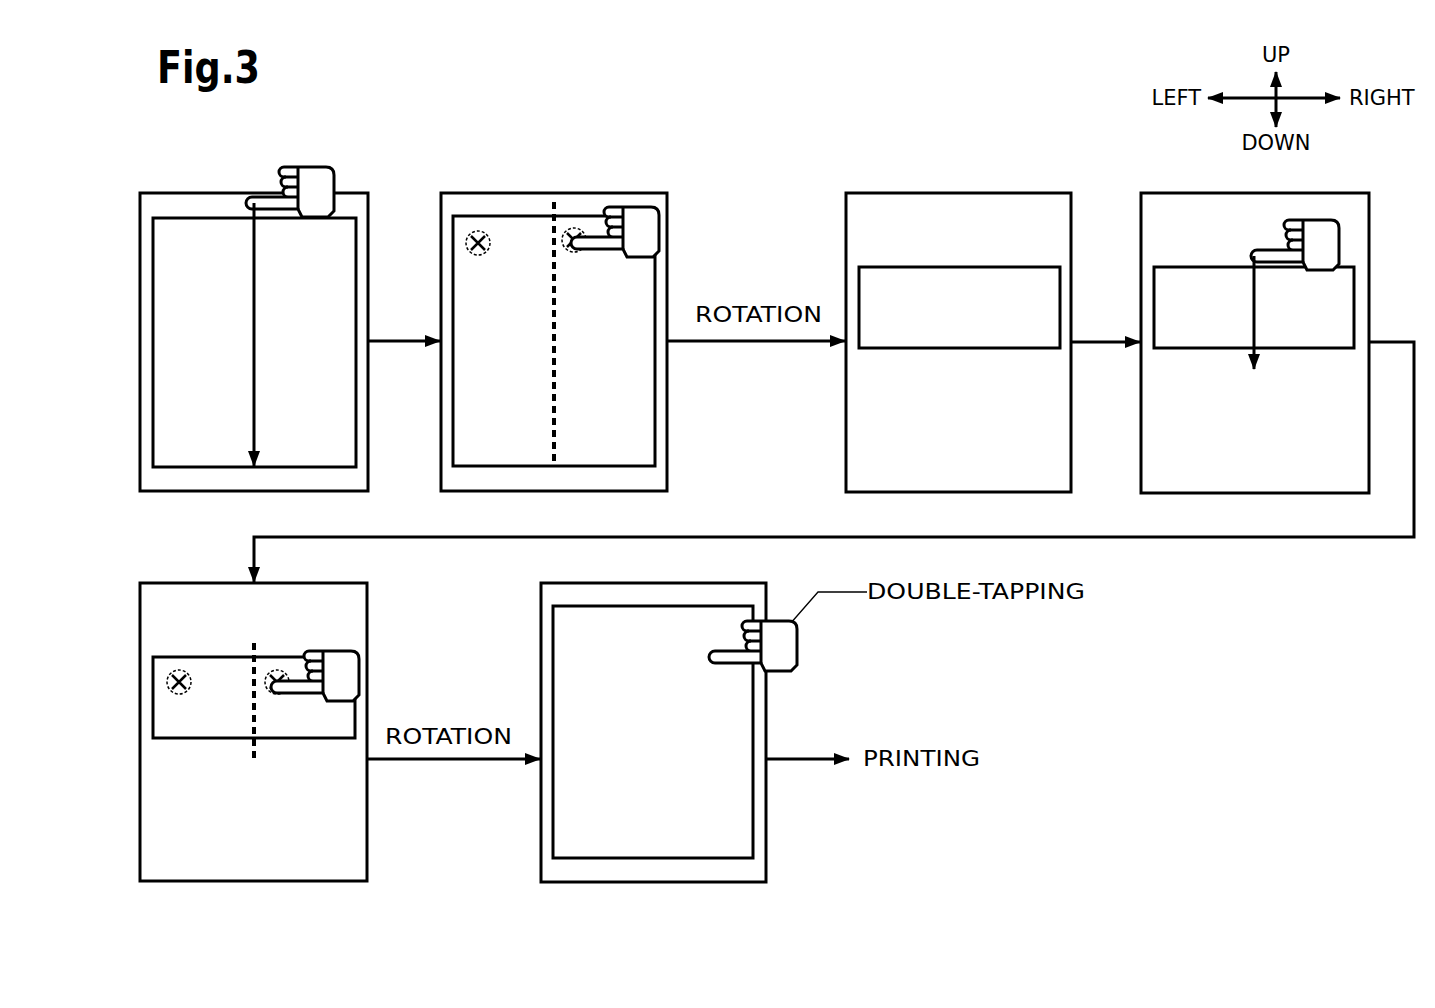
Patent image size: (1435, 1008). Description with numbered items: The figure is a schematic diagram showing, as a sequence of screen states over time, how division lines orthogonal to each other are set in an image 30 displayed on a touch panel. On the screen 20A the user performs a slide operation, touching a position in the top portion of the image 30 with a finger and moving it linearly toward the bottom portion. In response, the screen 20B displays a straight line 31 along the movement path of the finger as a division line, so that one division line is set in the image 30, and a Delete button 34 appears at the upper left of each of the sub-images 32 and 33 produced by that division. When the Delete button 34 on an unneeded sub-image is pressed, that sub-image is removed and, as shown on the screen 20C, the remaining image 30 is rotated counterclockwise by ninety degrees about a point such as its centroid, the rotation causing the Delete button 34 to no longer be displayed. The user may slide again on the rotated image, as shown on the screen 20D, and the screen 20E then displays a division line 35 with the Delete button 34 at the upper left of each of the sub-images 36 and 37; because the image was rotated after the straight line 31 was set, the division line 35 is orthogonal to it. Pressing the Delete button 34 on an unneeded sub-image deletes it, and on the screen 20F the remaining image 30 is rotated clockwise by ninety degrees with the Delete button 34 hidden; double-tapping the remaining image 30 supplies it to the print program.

The screen 20A is at (159, 193).
The screen 20B is at (527, 193).
The screen 20C is at (899, 193).
The screen 20D is at (1161, 193).
The screen 20E is at (165, 583).
The screen 20F is at (553, 583).
The image 30 is at (213, 218).
The straight line 31 is at (560, 420).
The sub-image 32 is at (502, 442).
The sub-image 33 is at (623, 440).
The Delete button 34 is at (576, 228).
The division line 35 is at (256, 720).
The sub-image 36 is at (229, 740).
The sub-image 37 is at (342, 740).